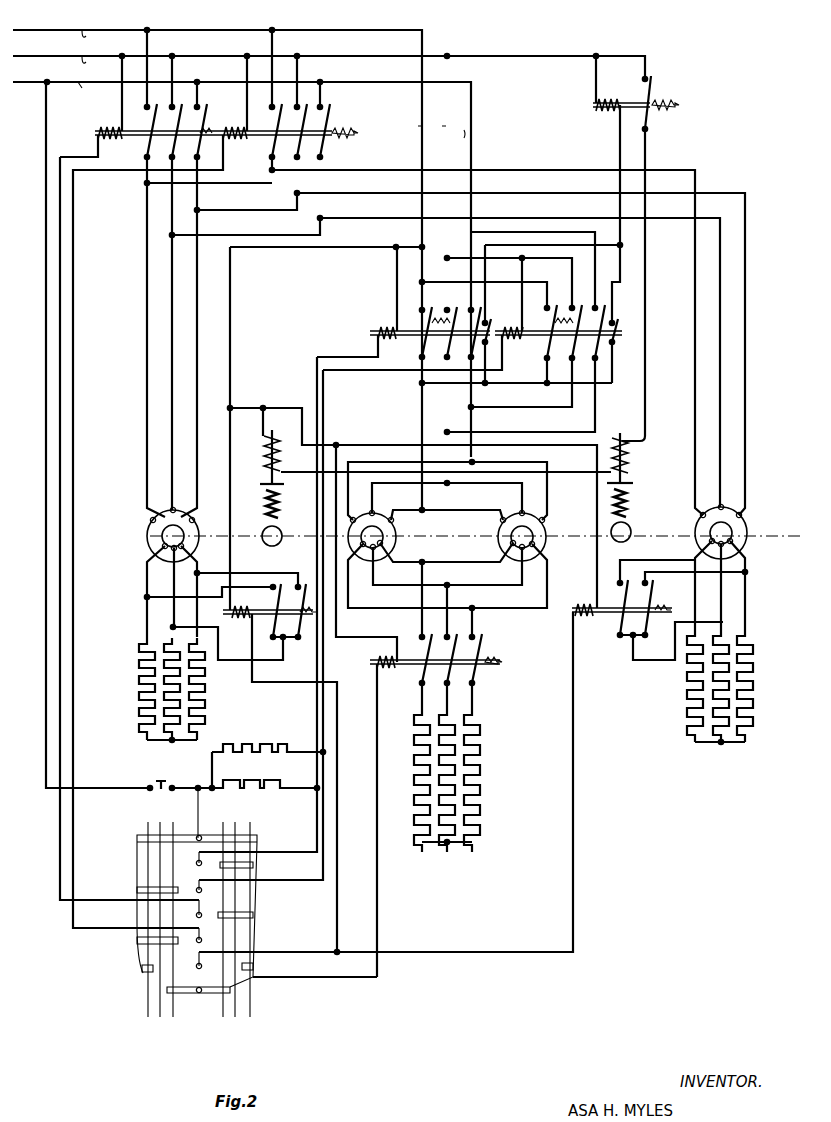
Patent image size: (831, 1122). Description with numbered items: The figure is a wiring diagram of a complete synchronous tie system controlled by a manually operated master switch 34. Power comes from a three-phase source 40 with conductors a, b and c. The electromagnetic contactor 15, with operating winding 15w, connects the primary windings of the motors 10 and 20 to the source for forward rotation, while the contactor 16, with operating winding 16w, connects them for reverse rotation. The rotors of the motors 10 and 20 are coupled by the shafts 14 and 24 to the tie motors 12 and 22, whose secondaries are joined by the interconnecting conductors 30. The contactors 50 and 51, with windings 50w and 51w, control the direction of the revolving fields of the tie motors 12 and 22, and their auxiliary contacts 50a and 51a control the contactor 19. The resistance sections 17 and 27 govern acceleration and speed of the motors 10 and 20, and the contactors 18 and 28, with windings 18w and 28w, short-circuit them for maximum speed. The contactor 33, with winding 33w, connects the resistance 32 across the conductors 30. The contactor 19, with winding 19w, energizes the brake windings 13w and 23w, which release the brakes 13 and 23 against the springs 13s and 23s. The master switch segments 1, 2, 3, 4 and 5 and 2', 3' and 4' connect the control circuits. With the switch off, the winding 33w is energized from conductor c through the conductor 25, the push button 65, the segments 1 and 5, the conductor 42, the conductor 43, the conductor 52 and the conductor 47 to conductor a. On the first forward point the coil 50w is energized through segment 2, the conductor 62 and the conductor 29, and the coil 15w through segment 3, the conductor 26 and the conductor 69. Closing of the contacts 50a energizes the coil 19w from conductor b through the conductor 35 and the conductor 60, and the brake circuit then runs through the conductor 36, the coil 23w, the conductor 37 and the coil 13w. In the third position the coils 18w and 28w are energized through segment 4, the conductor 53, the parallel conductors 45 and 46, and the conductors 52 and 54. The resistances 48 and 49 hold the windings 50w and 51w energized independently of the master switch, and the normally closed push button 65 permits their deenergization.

The polyphase source of power 40 is at (37, 34).
The conductor 69 is at (121, 103).
The operating winding 15w is at (104, 132).
The electromagnetic contactor 15 is at (130, 144).
The operating winding 16w is at (239, 133).
The electromagnetic contactor 16 is at (256, 143).
The master switch 34 is at (583, 55).
The operating winding 19w is at (598, 104).
The electromagnetic contactor 19 is at (641, 110).
The conductor 36 is at (646, 357).
The conductor 35 is at (620, 245).
The conductor 25 is at (45, 341).
The conductor 26 is at (64, 762).
The conductor 47 is at (231, 343).
The conductor 29 is at (396, 277).
The conductor 54 is at (230, 495).
The conductor 52 is at (240, 408).
The operating winding 50w is at (381, 332).
The electromagnetic contactor 50 is at (408, 340).
The auxiliary contacts 50a is at (489, 324).
The conductor 60 is at (487, 385).
The operating winding 51w is at (520, 333).
The electromagnetic contactor 51 is at (529, 340).
The auxiliary contacts 51a is at (614, 322).
The conductor 37 is at (586, 476).
The operating winding 13w is at (281, 459).
The spring 13s is at (264, 509).
The electromagnetic brake 13 is at (282, 525).
The shaft 14 is at (242, 546).
The motor 10 is at (146, 538).
The resistance section 17 is at (156, 690).
The operating winding 18w is at (250, 604).
The electromagnetic contactor 18 is at (231, 616).
The conductor 45 is at (338, 896).
The conductor 62 is at (316, 722).
The conductor 43 is at (338, 625).
The interconnecting conductors 30 is at (446, 544).
The tie motor 12 is at (397, 537).
The tie motor 22 is at (496, 537).
The operating winding 33w is at (381, 663).
The electromagnetic contactor 33 is at (415, 669).
The resistance 32 is at (447, 787).
The conductor 42 is at (309, 979).
The operating winding 23w is at (626, 461).
The spring 23s is at (630, 499).
The electromagnetic brake 23 is at (631, 521).
The shaft 24 is at (660, 540).
The motor 20 is at (748, 534).
The operating winding 28w is at (590, 600).
The electromagnetic contactor 28 is at (658, 610).
The conductor 46 is at (572, 896).
The resistance section 27 is at (704, 687).
The push button 65 is at (158, 767).
The resistance 48 is at (263, 777).
The resistance 49 is at (262, 745).
The conductor 53 is at (310, 949).
The segment 1 is at (258, 838).
The segment 2 is at (235, 864).
The segment 3 is at (235, 914).
The segment 4 is at (236, 964).
The segment 5 is at (216, 994).
The segment 2' is at (155, 887).
The segment 3' is at (155, 939).
The segment 4' is at (130, 963).